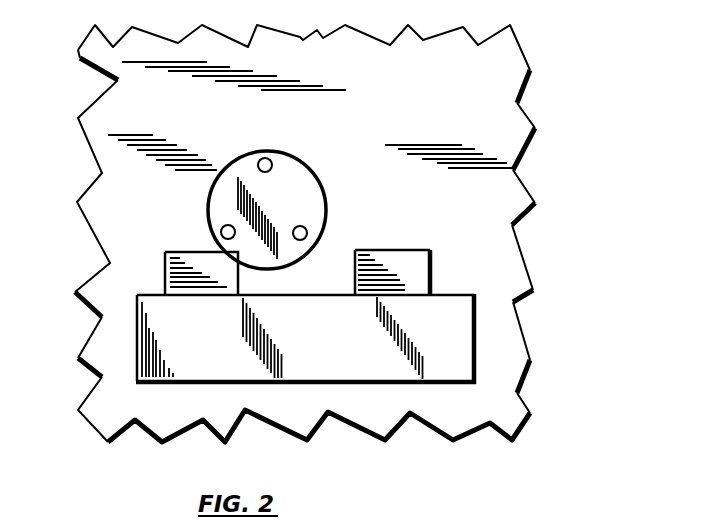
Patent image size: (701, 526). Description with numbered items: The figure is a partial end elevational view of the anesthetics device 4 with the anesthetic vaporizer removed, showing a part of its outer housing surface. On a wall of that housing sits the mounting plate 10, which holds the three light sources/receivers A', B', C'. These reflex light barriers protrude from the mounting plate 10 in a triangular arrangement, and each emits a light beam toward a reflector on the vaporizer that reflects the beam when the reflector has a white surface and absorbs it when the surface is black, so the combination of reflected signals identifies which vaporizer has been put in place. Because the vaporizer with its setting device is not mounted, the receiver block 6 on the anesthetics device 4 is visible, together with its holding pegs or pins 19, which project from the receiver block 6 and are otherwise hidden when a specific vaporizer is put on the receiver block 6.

The anesthetics device 4 is at (478, 102).
The receiver block 6 is at (422, 332).
The holding pegs or pins 19 is at (165, 275).
The mounting plate 10 is at (302, 193).
The light source/receiver A' is at (269, 142).
The light source/receiver B' is at (318, 253).
The light source/receiver C' is at (186, 232).